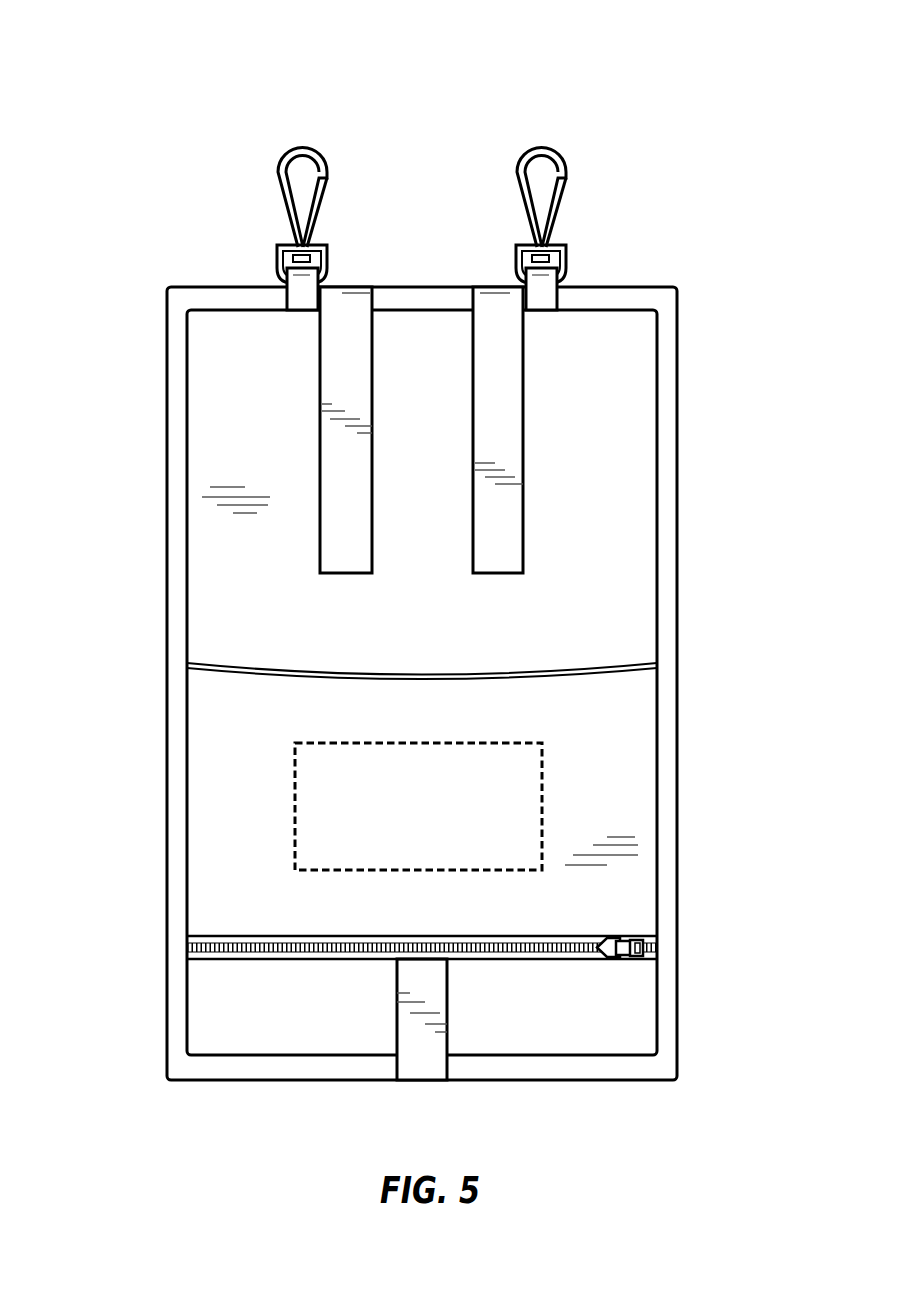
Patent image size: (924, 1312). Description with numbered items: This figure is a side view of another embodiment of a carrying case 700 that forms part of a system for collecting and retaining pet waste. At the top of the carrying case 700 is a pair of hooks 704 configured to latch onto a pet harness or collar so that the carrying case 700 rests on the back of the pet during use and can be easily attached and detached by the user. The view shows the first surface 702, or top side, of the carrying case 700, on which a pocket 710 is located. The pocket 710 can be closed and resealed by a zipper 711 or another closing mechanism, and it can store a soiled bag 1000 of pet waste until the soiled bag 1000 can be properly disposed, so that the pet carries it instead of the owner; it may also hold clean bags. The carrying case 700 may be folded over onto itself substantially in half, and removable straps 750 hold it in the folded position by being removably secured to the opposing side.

The carrying case 700 is at (124, 74).
The first surface 702 is at (618, 504).
The hooks 704 is at (302, 145).
The removable straps 750 is at (483, 287).
The pocket 710 is at (623, 811).
The zipper 711 is at (627, 949).
The soiled bag 1000 is at (542, 778).